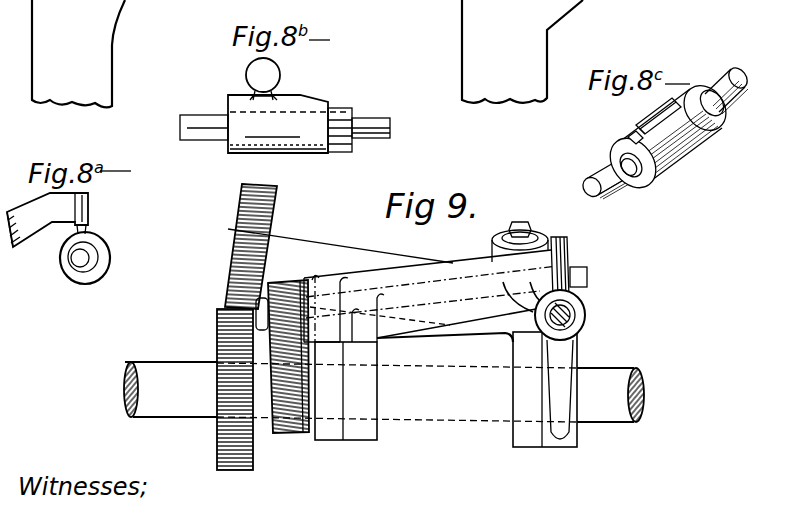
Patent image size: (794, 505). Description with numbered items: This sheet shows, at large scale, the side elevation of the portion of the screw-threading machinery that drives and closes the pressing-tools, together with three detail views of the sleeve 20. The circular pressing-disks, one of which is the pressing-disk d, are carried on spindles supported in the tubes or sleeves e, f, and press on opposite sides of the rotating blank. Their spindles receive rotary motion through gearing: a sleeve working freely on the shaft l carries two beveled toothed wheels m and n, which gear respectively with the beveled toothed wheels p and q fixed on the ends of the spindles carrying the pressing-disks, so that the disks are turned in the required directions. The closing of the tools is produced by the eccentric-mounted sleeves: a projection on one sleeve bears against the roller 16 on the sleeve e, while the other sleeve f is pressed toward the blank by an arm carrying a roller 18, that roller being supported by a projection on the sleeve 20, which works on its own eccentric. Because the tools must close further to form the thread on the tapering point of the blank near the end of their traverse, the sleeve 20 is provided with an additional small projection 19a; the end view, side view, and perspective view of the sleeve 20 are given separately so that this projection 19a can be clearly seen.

In FIG. 8A, the small projection 19a is at (90, 230).
In FIG. 8B, the small projection 19a is at (274, 90).
In FIG. 8C, the small projection 19a is at (630, 124).
In FIG. 8A, the sleeve 20 is at (99, 258).
In FIG. 8B, the sleeve 20 is at (329, 102).
In FIG. 8C, the sleeve 20 is at (628, 185).
In FIG. 9, the roller 16 is at (492, 247).
In FIG. 9, the roller 18 is at (587, 317).
In FIG. 9, the pressing-disk d is at (568, 253).
In FIG. 9, the sleeve e is at (318, 296).
In FIG. 9, the sleeve f is at (440, 348).
In FIG. 9, the shaft l is at (384, 392).
In FIG. 9, the beveled toothed wheel m is at (217, 345).
In FIG. 9, the beveled toothed wheel n is at (288, 356).
In FIG. 9, the beveled toothed wheel p is at (331, 239).
In FIG. 9, the beveled toothed wheel q is at (275, 314).